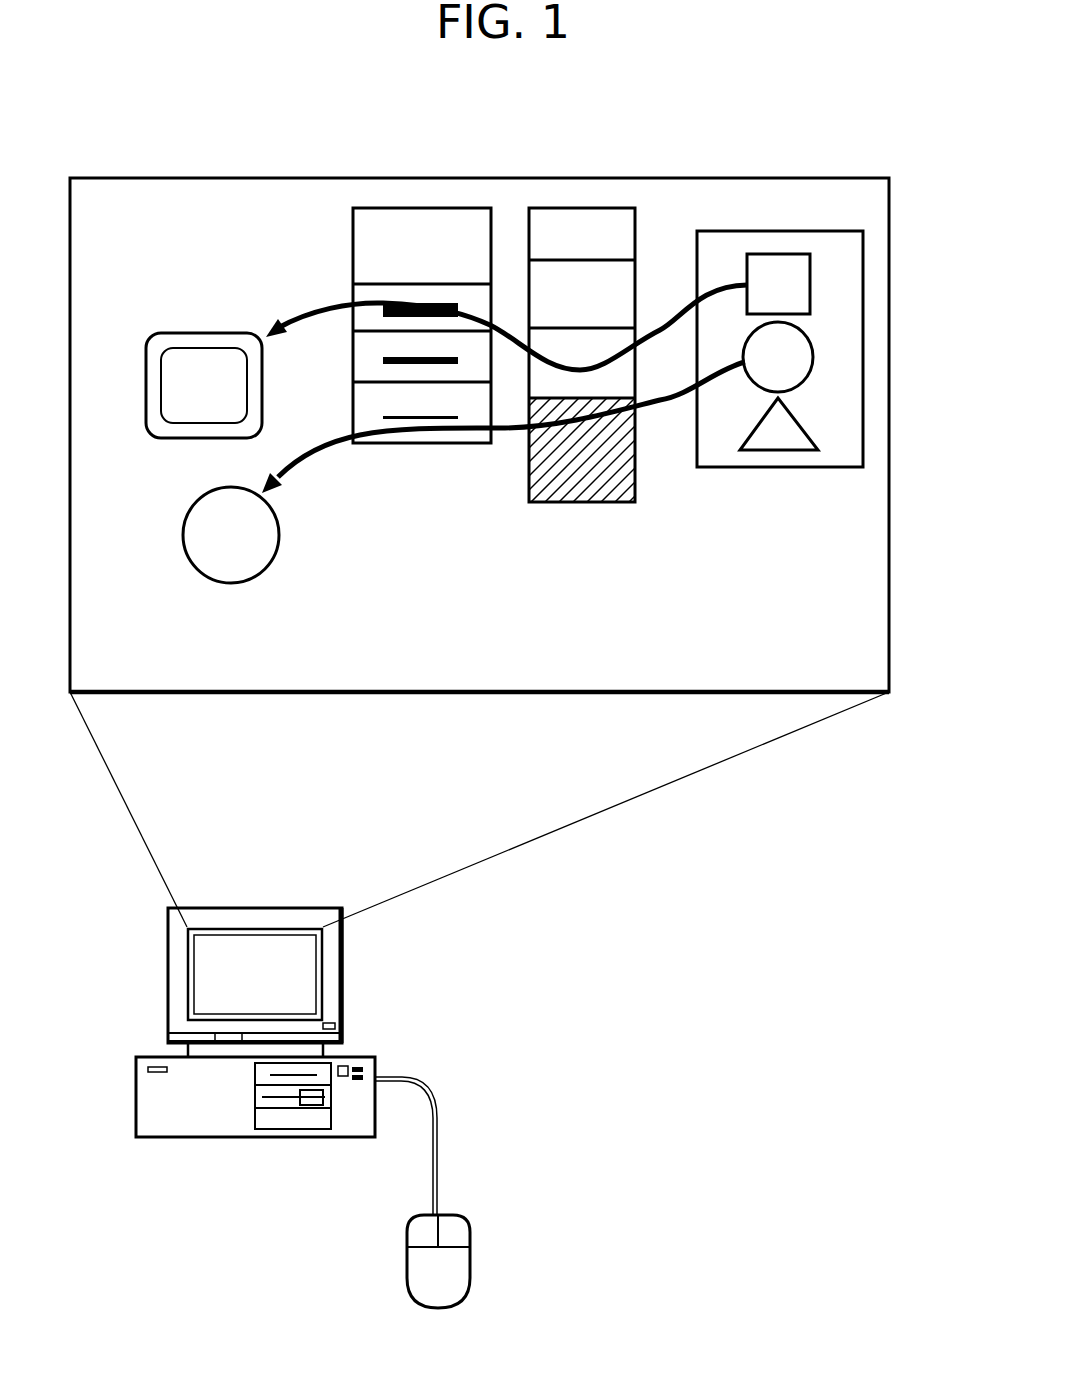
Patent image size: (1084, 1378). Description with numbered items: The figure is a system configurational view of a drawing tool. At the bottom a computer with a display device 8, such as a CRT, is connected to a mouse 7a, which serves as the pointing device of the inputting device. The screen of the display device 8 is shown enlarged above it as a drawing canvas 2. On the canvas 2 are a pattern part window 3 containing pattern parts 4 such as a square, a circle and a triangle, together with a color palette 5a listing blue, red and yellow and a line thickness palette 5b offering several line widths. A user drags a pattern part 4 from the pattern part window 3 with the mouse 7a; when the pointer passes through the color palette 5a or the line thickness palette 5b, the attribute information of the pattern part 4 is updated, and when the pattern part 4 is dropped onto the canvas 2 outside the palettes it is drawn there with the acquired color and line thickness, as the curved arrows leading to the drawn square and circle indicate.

The drawing canvas 2 is at (436, 693).
The pattern part window 3 is at (779, 467).
The pattern parts 4 is at (811, 285).
The color palette 5a is at (635, 272).
The line thickness palette 5b is at (491, 295).
The display device 8 is at (343, 960).
The mouse 7a is at (471, 1262).